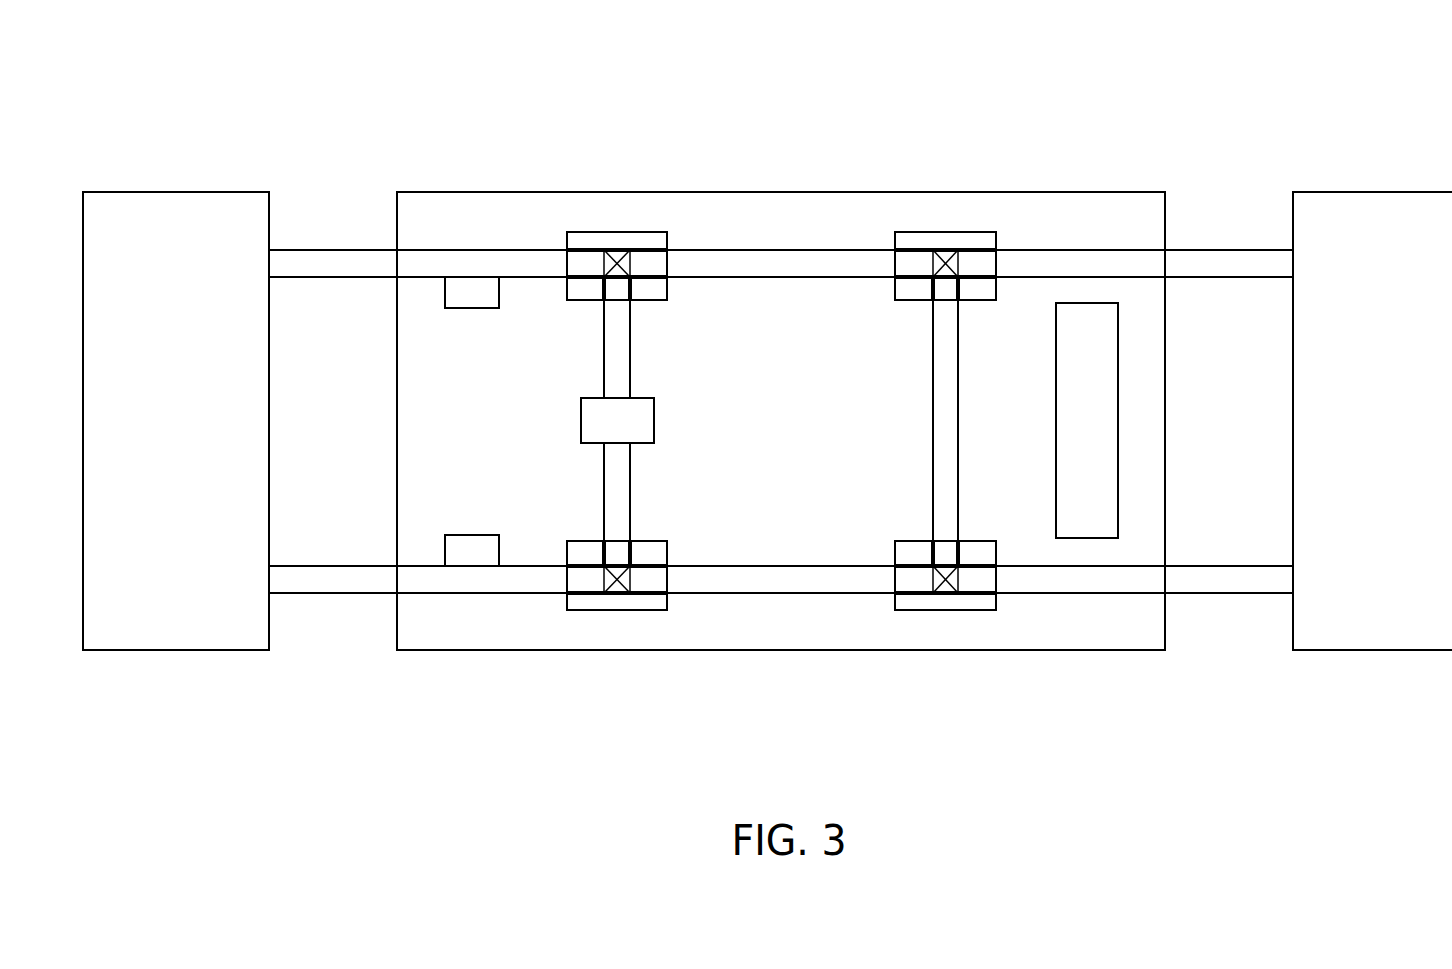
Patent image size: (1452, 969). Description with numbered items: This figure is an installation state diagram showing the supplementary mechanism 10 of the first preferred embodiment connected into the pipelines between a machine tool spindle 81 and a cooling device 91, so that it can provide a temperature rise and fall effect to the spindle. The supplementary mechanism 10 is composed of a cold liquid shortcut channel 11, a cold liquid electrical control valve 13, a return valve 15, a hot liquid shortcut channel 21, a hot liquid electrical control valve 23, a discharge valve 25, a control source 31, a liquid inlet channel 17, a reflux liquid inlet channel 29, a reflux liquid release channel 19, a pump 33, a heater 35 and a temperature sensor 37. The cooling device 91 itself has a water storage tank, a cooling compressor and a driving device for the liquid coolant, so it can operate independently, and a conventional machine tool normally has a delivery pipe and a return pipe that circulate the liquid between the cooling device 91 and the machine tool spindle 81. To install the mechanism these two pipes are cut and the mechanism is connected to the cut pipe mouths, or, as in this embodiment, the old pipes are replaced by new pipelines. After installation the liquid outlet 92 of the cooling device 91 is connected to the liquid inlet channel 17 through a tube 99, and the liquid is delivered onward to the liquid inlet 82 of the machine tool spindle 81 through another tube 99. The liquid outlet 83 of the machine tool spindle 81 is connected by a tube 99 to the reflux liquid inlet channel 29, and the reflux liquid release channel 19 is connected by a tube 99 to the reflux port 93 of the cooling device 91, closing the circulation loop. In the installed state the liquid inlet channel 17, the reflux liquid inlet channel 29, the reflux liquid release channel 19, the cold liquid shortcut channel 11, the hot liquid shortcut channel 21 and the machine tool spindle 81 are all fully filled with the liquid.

The supplementary mechanism 10 is at (838, 137).
The cold liquid shortcut channel 11 is at (933, 420).
The cold liquid electrical control valve 13 is at (945, 610).
The return valve 15 is at (948, 232).
The liquid inlet channel 17 is at (1083, 593).
The reflux liquid release channel 19 is at (1090, 250).
The hot liquid shortcut channel 21 is at (630, 485).
The hot liquid electrical control valve 23 is at (617, 232).
The discharge valve 25 is at (616, 610).
The reflux liquid inlet channel 29 is at (427, 250).
The control source 31 is at (1118, 420).
The pump 33 is at (581, 420).
The heater 35 is at (472, 535).
The temperature sensor 37 is at (470, 310).
The machine tool spindle 81 is at (190, 192).
The liquid inlet 82 is at (269, 593).
The liquid outlet 83 is at (269, 250).
The cooling device 91 is at (1373, 192).
The liquid outlet 92 is at (1293, 593).
The reflux port 93 is at (1293, 250).
The tube 99 is at (355, 250).